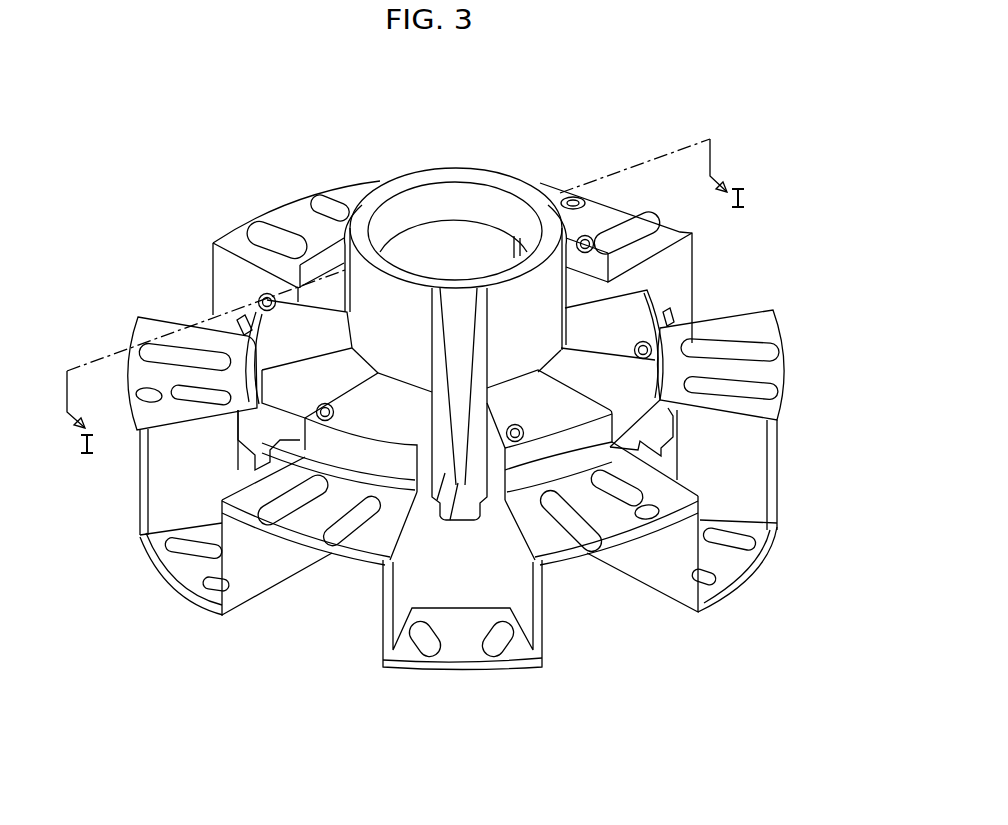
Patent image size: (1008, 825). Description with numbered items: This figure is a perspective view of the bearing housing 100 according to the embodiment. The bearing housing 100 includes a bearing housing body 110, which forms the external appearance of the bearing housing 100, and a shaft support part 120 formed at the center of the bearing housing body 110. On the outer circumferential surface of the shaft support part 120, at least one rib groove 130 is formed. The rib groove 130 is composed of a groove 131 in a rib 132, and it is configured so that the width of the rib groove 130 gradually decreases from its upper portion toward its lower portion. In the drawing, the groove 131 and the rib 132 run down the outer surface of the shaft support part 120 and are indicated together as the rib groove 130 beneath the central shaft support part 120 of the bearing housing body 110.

The bearing housing 100 is at (481, 104).
The bearing housing body 110 is at (672, 232).
The shaft support part 120 is at (492, 180).
The rib groove 130 is at (390, 729).
The groove 131 is at (450, 530).
The rib 132 is at (437, 520).